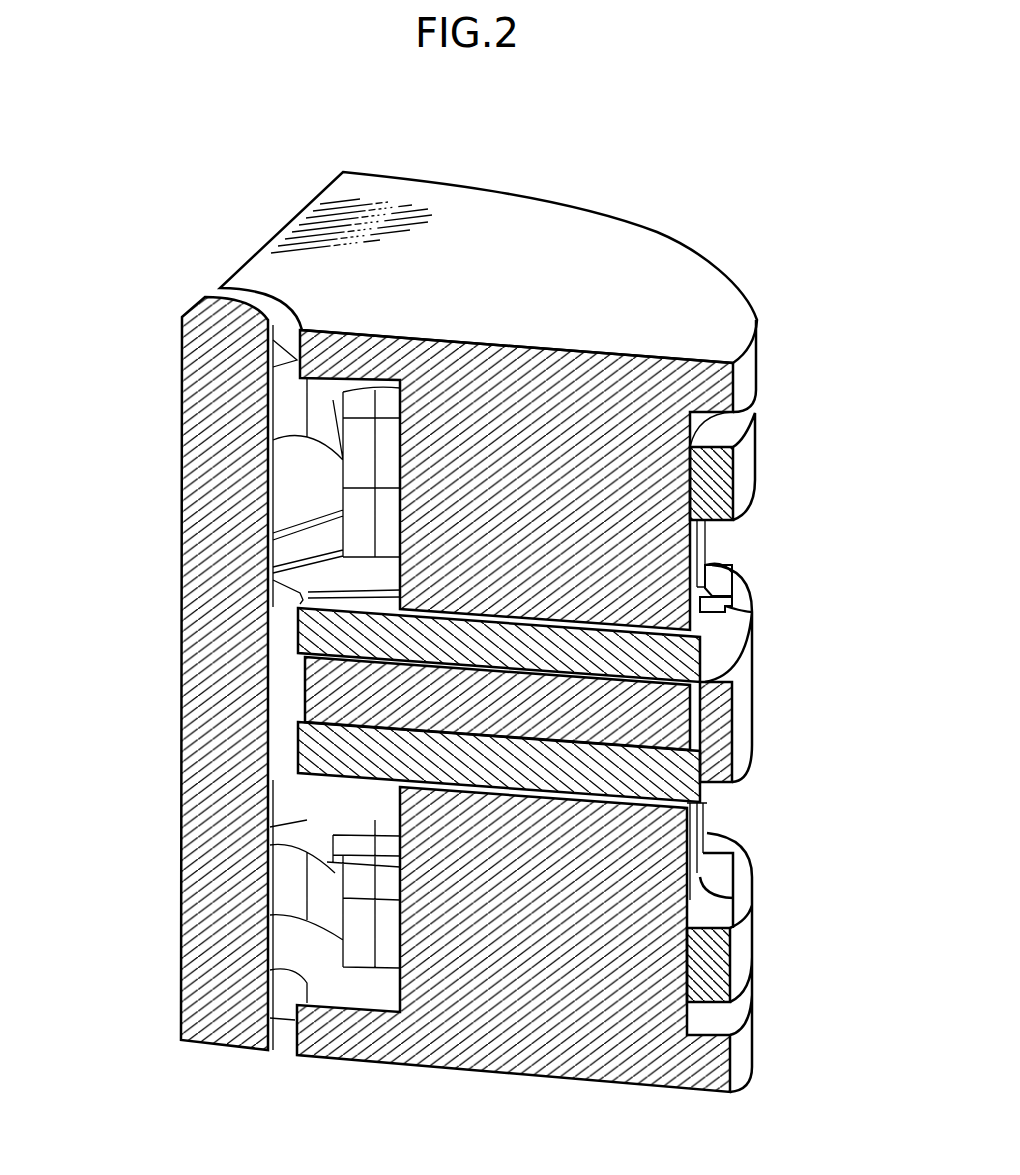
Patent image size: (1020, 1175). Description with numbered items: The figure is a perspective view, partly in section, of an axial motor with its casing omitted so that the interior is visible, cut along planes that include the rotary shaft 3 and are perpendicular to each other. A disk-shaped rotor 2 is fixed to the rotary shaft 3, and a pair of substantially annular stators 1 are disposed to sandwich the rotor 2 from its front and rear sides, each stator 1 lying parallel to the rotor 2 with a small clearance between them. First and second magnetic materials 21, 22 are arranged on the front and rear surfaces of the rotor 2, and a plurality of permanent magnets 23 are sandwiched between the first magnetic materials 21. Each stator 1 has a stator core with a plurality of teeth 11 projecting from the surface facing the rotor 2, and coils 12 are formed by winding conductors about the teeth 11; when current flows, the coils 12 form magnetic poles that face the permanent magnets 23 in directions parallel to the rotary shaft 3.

The stator 1 is at (632, 268).
The rotor 2 is at (720, 682).
The rotary shaft 3 is at (207, 379).
The teeth 11 is at (657, 542).
The coils 12 is at (710, 487).
The first magnetic material 21 is at (712, 618).
The second magnetic material 22 is at (720, 588).
The permanent magnets 23 is at (653, 722).